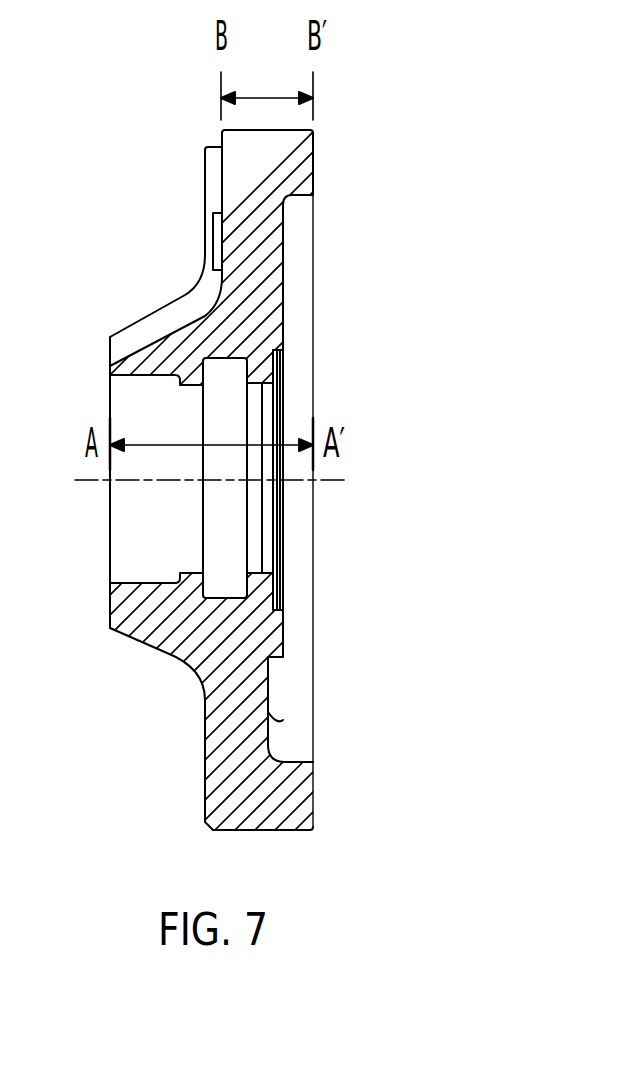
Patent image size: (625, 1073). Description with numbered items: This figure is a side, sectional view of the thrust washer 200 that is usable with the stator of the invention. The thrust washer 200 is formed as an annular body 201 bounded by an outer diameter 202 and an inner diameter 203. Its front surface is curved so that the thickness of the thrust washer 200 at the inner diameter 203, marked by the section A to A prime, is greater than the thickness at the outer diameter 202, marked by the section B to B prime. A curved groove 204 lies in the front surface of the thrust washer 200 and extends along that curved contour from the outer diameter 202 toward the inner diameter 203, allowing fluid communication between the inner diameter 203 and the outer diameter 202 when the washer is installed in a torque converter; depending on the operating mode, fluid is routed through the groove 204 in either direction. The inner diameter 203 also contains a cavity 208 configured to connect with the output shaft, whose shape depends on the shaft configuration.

The thrust washer 200 is at (312, 483).
The annular body 201 is at (193, 640).
The outer diameter 202 is at (286, 832).
The inner diameter 203 is at (142, 372).
The curved groove 204 is at (203, 288).
The cavity 208 is at (225, 378).